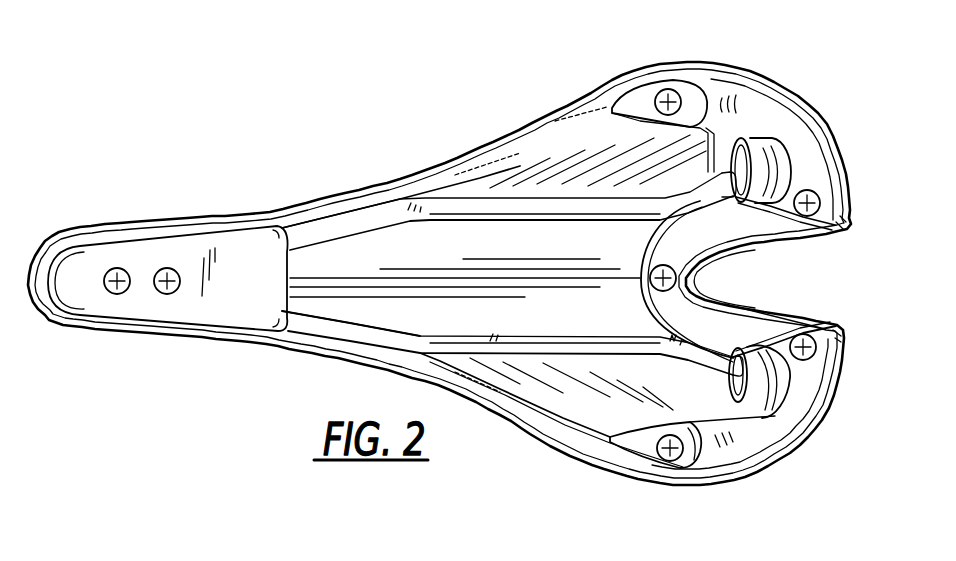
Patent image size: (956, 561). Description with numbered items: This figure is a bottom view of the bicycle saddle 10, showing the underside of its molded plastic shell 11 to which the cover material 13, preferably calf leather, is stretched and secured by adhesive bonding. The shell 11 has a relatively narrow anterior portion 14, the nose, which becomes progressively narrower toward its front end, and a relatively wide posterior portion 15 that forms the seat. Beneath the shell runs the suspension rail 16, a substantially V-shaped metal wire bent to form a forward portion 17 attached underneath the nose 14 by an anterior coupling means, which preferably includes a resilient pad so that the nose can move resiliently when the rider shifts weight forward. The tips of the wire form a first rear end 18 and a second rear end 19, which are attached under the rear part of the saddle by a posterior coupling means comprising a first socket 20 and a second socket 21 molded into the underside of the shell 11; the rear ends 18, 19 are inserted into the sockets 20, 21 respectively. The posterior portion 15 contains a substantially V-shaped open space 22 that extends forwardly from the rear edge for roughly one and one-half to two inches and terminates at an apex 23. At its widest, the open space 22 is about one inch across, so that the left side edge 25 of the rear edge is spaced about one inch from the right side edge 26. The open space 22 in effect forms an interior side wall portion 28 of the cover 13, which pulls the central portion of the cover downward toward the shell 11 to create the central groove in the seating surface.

The bicycle saddle 10 is at (300, 150).
The shell 11 is at (377, 273).
The cover material 13 is at (505, 137).
The anterior portion 14 is at (133, 222).
The posterior portion 15 is at (632, 73).
The suspension rail 16 is at (443, 208).
The forward portion 17 is at (303, 323).
The first rear end 18 is at (714, 172).
The second rear end 19 is at (720, 380).
The first socket 20 is at (735, 158).
The second socket 21 is at (735, 380).
The V-shaped open space 22 is at (800, 263).
The apex 23 is at (707, 280).
The left side edge 25 is at (847, 227).
The right side edge 26 is at (870, 325).
The interior side wall portion 28 is at (797, 310).